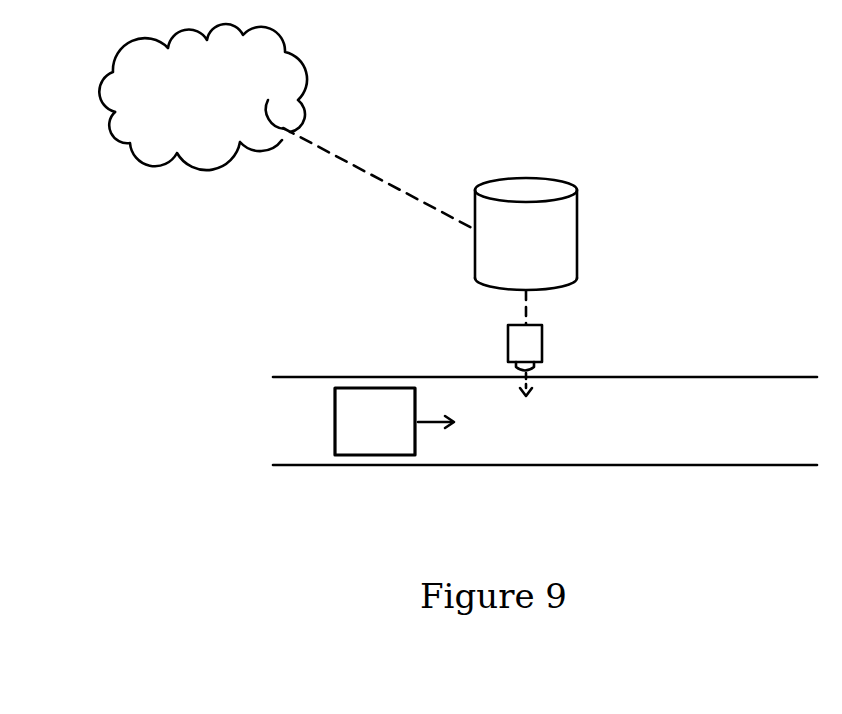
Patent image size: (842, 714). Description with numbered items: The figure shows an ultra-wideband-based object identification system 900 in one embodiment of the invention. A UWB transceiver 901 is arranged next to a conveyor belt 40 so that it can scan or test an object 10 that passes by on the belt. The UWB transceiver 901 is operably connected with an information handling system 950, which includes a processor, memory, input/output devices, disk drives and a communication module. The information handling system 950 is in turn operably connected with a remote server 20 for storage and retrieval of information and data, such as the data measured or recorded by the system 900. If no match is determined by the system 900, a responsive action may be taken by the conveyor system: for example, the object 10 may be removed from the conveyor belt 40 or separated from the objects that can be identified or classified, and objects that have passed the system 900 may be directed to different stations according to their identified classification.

The remote server 20 is at (212, 114).
The ultra-wideband-based object identification system 900 is at (597, 277).
The information handling system 950 is at (554, 255).
The UWB transceiver 901 is at (538, 342).
The object 10 is at (377, 444).
The conveyor belt 40 is at (757, 467).